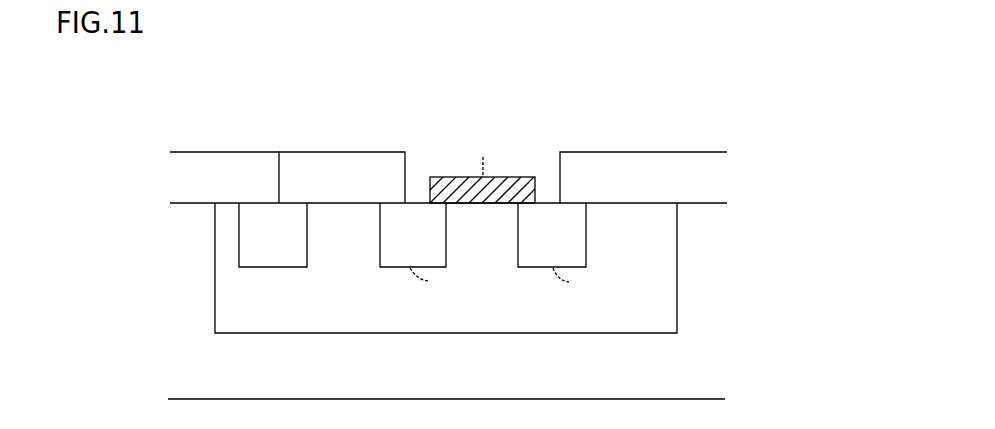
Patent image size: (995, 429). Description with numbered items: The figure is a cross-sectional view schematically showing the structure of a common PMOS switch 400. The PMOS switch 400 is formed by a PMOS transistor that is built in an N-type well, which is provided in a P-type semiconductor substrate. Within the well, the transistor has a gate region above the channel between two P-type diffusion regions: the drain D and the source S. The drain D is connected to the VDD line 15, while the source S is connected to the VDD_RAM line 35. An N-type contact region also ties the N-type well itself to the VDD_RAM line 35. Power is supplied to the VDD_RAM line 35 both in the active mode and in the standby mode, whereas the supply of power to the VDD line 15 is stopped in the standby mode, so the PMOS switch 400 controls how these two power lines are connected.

The PMOS switch 400 is at (596, 102).
The VDD_RAM line 35 is at (267, 162).
The VDD line 15 is at (651, 163).